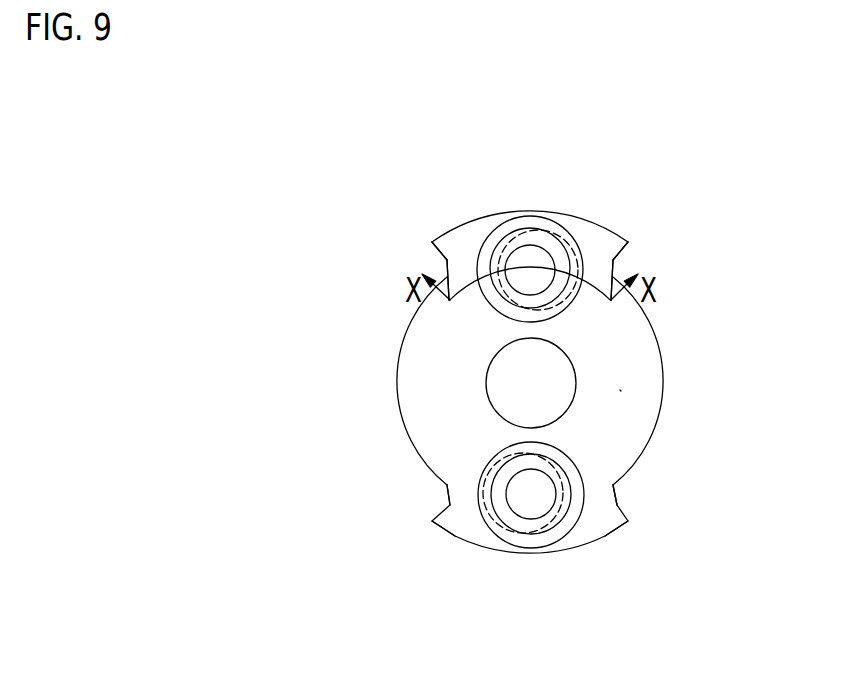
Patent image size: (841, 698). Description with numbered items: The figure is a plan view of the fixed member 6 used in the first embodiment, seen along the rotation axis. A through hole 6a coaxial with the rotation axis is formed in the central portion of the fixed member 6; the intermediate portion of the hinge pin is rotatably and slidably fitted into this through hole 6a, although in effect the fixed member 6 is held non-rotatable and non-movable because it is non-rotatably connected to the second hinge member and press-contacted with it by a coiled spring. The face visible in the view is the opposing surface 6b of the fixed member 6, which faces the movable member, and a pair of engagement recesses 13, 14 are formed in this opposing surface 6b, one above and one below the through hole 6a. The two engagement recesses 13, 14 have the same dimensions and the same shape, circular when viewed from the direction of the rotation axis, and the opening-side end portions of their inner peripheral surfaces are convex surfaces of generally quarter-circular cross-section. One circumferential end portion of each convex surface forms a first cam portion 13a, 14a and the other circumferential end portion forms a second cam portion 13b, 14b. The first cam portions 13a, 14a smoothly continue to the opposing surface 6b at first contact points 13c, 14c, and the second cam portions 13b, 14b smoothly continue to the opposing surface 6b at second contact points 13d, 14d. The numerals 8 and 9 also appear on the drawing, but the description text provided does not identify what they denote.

The fixed member 6 is at (676, 337).
The through hole 6a is at (487, 385).
The opposing surface 6b is at (620, 390).
The cylindrical boss portion 8 is at (503, 250).
The eccentric portion 9 is at (553, 230).
The engagement recess 13 is at (525, 226).
The first cam portion 13a is at (490, 256).
The second cam portion 13b is at (580, 253).
The first contact point 13c is at (492, 283).
The second contact point 13d is at (567, 270).
The engagement recess 14 is at (528, 548).
The first cam portion 14a is at (593, 504).
The second cam portion 14b is at (495, 515).
The first contact point 14c is at (571, 492).
The second contact point 14d is at (490, 494).